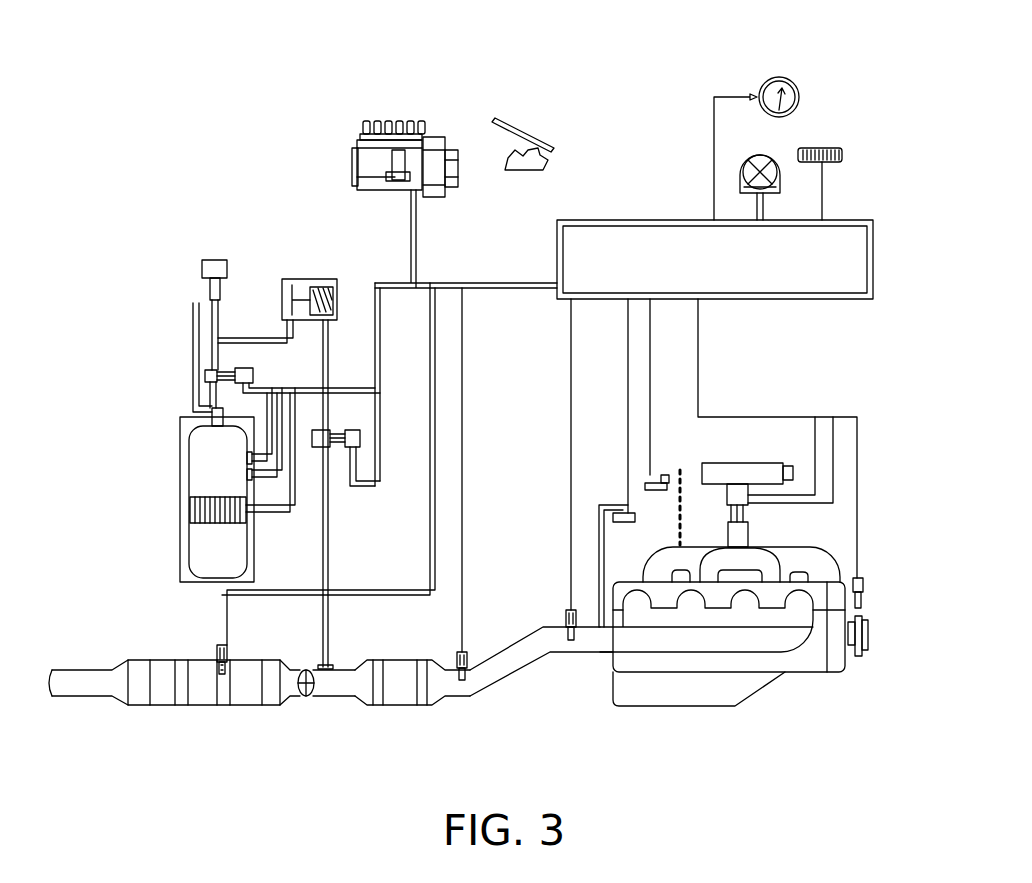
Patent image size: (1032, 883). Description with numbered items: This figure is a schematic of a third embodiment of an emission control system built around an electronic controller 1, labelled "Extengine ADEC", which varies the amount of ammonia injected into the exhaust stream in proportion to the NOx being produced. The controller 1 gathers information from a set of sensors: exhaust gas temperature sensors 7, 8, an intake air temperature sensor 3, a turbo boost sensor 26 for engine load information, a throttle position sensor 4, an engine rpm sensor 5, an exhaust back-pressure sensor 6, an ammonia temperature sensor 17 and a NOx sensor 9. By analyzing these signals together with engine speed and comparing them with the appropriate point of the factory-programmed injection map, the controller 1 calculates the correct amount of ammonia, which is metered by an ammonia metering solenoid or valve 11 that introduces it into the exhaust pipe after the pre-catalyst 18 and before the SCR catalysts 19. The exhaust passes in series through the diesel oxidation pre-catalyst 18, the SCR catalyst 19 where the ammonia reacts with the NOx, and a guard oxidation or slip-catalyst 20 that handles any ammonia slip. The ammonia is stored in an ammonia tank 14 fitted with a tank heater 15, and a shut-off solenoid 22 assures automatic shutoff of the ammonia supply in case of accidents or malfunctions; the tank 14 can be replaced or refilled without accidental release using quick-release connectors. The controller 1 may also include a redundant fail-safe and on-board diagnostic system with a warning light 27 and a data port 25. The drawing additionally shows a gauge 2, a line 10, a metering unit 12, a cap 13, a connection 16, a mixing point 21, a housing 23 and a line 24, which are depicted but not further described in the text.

The controller 1 is at (715, 233).
The display gauge 2 is at (756, 120).
The intake air temperature sensor 3 is at (777, 438).
The throttle position sensor 4 is at (573, 305).
The engine rpm sensor 5 is at (880, 601).
The exhaust back-pressure sensor 6 is at (604, 463).
The exhaust gas temperature sensor 7 is at (545, 469).
The exhaust gas temperature sensor 8 is at (196, 644).
The NOx sensor 9 is at (437, 484).
The reductant feed line 10 is at (342, 494).
The ammonia metering valve 11 is at (329, 470).
The metering valve 12 is at (277, 283).
The filler cap 13 is at (211, 287).
The ammonia tank 14 is at (203, 474).
The tank heater 15 is at (212, 462).
The level sensor 16 is at (232, 426).
The NH3 temperature sensor 17 is at (237, 434).
The pre-catalyst 18 is at (412, 711).
The SCR catalyst 19 is at (214, 710).
The slip-catalyst 20 is at (106, 710).
The mixer/injection point 21 is at (318, 711).
The shut-off solenoid 22 is at (208, 362).
The tank housing 23 is at (187, 499).
The vent line 24 is at (174, 348).
The data port 25 is at (825, 156).
The turbo boost sensor 26 is at (662, 422).
The warning light 27 is at (749, 163).